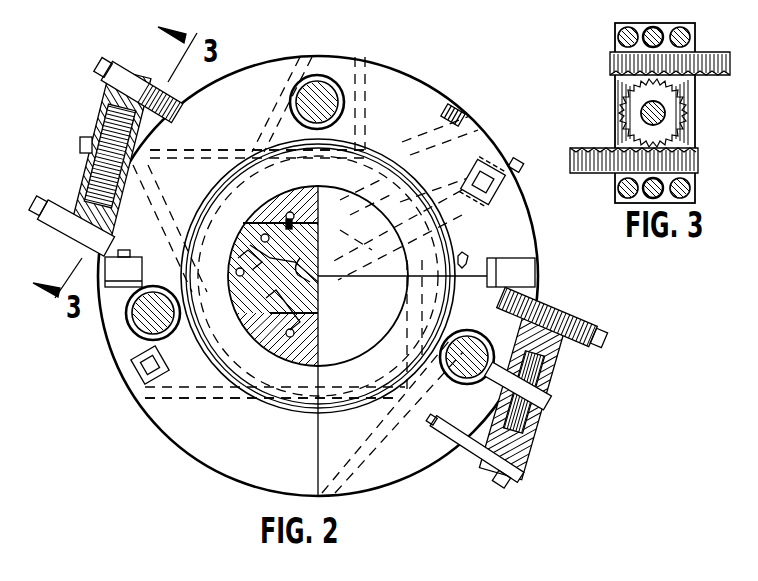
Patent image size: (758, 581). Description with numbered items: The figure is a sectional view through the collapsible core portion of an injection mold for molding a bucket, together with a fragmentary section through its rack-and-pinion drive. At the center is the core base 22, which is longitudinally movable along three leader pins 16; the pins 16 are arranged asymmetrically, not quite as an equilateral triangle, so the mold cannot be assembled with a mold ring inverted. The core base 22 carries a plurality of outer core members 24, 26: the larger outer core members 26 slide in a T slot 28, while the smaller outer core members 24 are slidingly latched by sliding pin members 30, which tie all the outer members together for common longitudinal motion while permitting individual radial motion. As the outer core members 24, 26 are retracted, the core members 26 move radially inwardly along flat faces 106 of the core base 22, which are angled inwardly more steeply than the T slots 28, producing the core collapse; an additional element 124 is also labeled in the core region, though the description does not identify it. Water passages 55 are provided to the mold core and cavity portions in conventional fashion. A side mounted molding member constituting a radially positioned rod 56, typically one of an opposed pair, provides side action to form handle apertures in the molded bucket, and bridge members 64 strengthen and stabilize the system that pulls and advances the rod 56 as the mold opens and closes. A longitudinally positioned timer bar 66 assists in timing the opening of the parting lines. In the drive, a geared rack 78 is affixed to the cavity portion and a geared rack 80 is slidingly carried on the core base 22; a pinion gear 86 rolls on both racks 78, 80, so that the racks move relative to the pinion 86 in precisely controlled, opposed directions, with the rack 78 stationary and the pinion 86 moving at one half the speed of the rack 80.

In FIG. 2, the leader pins 16 is at (310, 229).
In FIG. 2, the core base 22 is at (307, 250).
In FIG. 2, the outer core members 24 is at (276, 313).
In FIG. 2, the outer core members 26 is at (279, 250).
In FIG. 2, the T slot 28 is at (275, 292).
In FIG. 2, the sliding pin members 30 is at (228, 250).
In FIG. 2, the water passages 55 is at (258, 128).
In FIG. 2, the radially positioned rod 56 is at (163, 362).
In FIG. 2, the bridge members 64 is at (490, 160).
In FIG. 2, the timer bar 66 is at (110, 268).
In FIG. 2, the geared rack 78 is at (152, 95).
In FIG. 3, the geared rack 78 is at (705, 62).
In FIG. 2, the geared rack 80 is at (95, 202).
In FIG. 3, the geared rack 80 is at (602, 175).
In FIG. 2, the pinion gear 86 is at (120, 130).
In FIG. 3, the pinion gear 86 is at (690, 128).
In FIG. 2, the flat faces 106 is at (312, 282).
In FIG. 2, the channel 124 is at (270, 218).